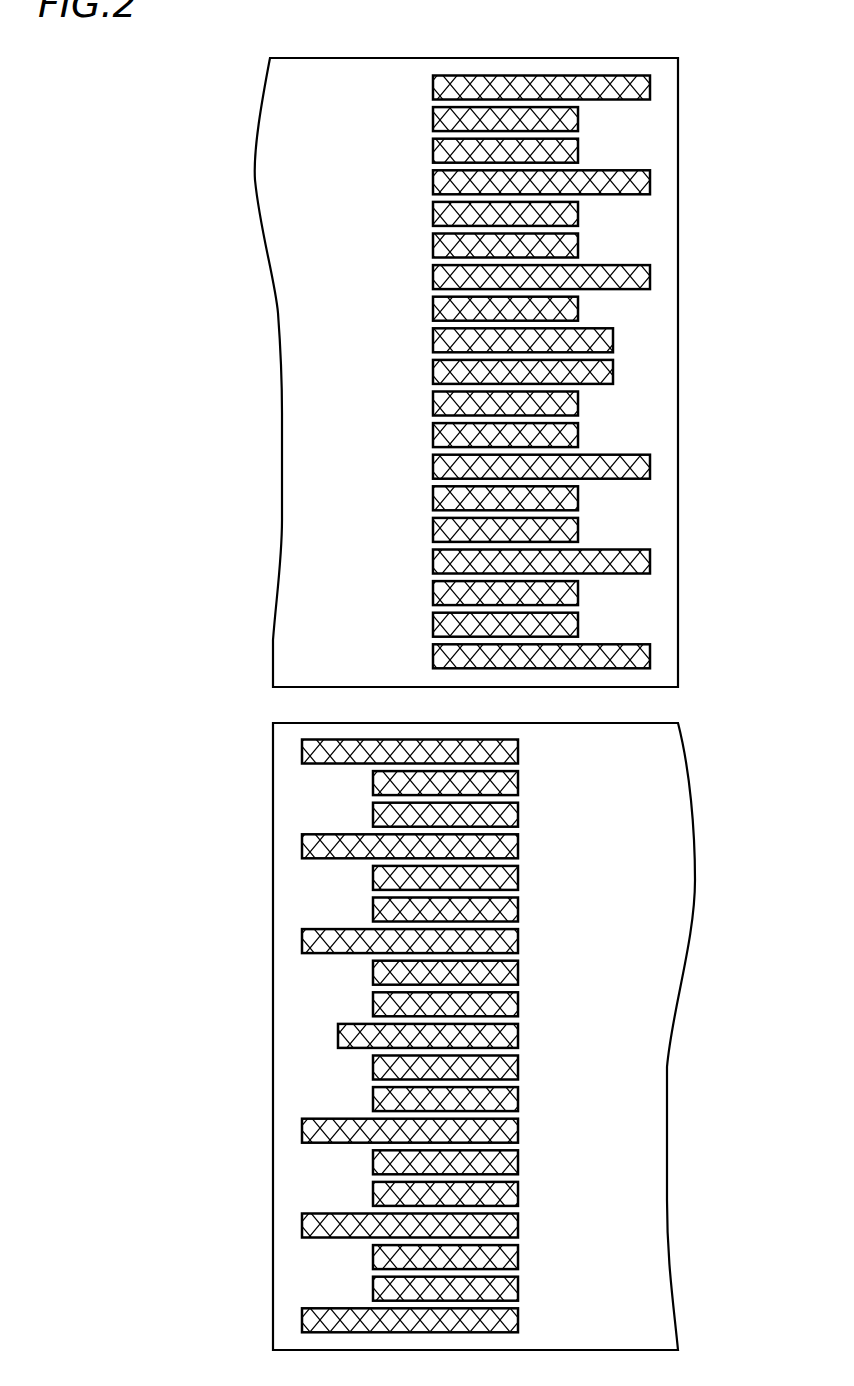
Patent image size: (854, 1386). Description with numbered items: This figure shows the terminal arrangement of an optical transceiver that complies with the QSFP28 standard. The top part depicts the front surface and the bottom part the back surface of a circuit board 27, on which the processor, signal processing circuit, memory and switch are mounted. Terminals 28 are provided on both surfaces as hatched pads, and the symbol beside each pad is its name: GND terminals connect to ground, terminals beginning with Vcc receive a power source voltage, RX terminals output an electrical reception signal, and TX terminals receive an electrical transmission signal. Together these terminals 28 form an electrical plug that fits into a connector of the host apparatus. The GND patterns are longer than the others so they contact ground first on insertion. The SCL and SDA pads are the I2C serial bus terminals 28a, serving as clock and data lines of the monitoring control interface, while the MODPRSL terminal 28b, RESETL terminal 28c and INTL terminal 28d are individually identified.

The circuit board 27 is at (270, 61).
The terminals 28 is at (650, 84).
The I2C serial bus terminals 28a is at (358, 1057).
The MODPRSL terminal 28b is at (578, 436).
The RESETL terminal 28c is at (373, 1004).
The INTL terminal 28d is at (578, 404).